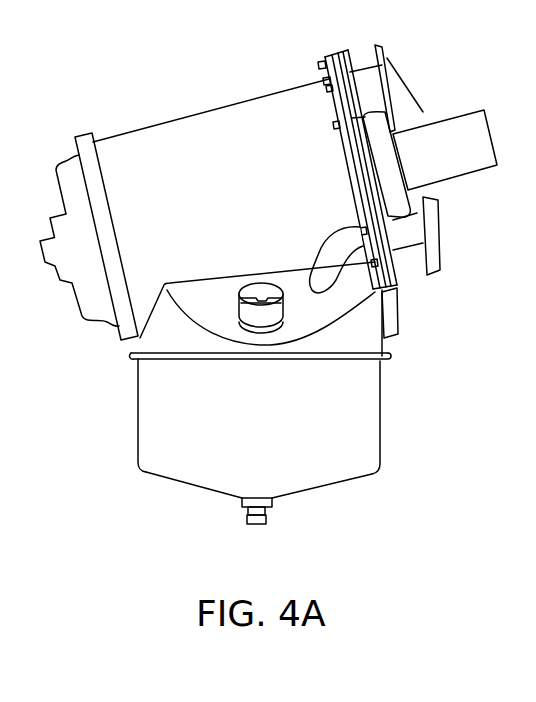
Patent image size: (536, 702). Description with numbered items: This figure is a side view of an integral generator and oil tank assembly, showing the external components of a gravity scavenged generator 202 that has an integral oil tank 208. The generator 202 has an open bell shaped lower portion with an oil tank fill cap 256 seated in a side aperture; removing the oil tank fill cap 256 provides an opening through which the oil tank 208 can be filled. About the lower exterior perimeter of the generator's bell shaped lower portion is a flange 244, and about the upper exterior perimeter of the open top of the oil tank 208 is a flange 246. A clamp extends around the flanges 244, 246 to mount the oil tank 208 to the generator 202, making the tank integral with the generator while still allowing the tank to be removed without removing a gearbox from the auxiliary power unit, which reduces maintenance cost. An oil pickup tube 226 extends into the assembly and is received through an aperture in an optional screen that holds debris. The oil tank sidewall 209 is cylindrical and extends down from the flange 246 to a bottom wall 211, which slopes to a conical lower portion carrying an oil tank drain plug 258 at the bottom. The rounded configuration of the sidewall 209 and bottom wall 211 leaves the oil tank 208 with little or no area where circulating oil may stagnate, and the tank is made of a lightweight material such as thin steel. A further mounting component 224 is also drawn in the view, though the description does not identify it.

The gravity scavenged generator 202 is at (199, 114).
The mounting block 224 is at (464, 120).
The oil pickup tube 226 is at (447, 190).
The flange 244 is at (130, 355).
The flange 246 is at (138, 362).
The oil tank fill cap 256 is at (272, 322).
The oil tank 208 is at (374, 443).
The oil tank sidewall 209 is at (138, 438).
The bottom wall 211 is at (305, 494).
The oil tank drain plug 258 is at (252, 526).